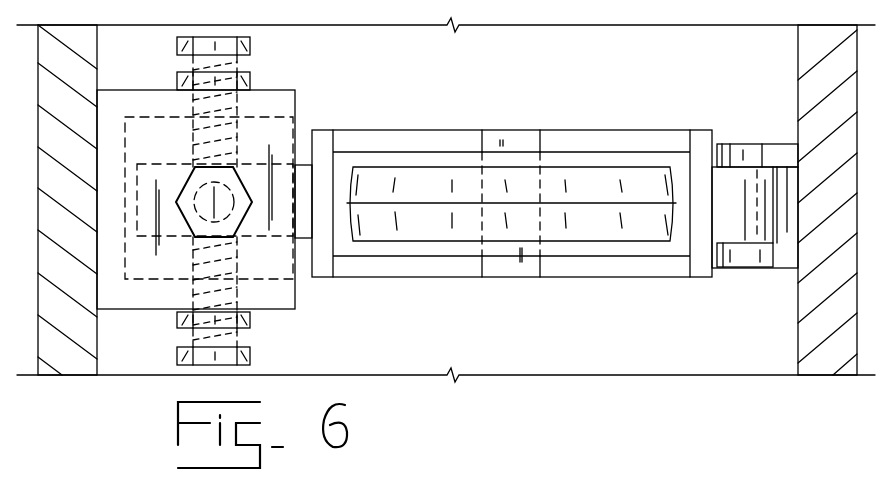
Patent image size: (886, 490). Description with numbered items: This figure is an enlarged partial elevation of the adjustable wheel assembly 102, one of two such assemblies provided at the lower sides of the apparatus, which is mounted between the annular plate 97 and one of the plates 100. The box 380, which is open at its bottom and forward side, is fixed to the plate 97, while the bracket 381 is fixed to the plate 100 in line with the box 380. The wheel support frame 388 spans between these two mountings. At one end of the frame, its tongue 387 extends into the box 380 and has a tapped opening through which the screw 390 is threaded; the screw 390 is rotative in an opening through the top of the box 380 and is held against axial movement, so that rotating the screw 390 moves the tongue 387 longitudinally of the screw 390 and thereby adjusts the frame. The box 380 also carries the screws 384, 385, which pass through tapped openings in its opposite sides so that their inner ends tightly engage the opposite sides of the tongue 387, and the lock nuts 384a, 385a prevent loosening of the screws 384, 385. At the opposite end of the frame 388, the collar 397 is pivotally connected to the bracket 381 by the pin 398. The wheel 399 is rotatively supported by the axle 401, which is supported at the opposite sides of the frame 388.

The annular plate 97 is at (97, 60).
The plate 100 is at (798, 62).
The adjustable wheel assembly 102 is at (510, 87).
The box 380 is at (295, 105).
The bracket 381 is at (752, 268).
The screw 384 is at (252, 47).
The lock nut 384a is at (252, 80).
The screw 385 is at (250, 355).
The lock nut 385a is at (250, 318).
The tongue 387 is at (305, 130).
The wheel support frame 388 is at (410, 279).
The screw 390 is at (240, 222).
The collar 397 is at (740, 243).
The pin 398 is at (727, 140).
The wheel 399 is at (583, 165).
The axle 401 is at (540, 243).